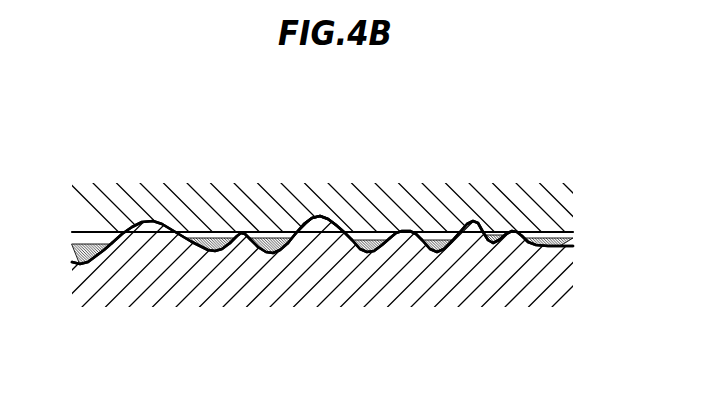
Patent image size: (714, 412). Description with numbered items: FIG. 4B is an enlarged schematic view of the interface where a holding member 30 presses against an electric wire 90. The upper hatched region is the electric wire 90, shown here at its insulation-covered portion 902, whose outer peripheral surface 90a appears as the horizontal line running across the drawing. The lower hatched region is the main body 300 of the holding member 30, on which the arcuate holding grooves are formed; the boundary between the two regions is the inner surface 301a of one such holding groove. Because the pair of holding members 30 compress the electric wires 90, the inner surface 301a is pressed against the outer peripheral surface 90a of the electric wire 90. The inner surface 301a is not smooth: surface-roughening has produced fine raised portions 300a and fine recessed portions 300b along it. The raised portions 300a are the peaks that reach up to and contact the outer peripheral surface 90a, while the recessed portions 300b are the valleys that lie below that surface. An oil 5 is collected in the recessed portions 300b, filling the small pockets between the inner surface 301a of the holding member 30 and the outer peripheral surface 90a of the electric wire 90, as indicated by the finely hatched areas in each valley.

The fine raised portion 300a is at (311, 218).
The fine recessed portion 300b is at (365, 255).
The inner surface of holding groove 301a is at (335, 211).
The electric wire 90 is at (358, 190).
The insulation-covered portion 902 is at (498, 192).
The outer peripheral surface of electric wire 90a is at (438, 236).
The holding member 30 is at (343, 281).
The main body 300 is at (510, 300).
The oil 5 is at (208, 252).